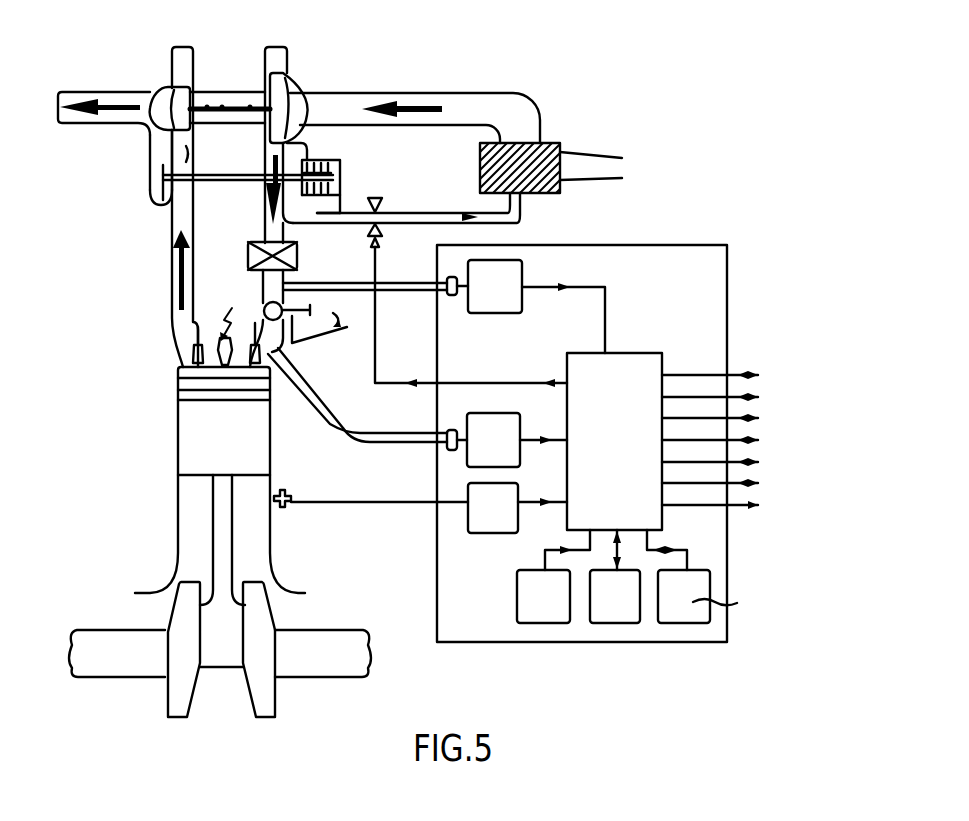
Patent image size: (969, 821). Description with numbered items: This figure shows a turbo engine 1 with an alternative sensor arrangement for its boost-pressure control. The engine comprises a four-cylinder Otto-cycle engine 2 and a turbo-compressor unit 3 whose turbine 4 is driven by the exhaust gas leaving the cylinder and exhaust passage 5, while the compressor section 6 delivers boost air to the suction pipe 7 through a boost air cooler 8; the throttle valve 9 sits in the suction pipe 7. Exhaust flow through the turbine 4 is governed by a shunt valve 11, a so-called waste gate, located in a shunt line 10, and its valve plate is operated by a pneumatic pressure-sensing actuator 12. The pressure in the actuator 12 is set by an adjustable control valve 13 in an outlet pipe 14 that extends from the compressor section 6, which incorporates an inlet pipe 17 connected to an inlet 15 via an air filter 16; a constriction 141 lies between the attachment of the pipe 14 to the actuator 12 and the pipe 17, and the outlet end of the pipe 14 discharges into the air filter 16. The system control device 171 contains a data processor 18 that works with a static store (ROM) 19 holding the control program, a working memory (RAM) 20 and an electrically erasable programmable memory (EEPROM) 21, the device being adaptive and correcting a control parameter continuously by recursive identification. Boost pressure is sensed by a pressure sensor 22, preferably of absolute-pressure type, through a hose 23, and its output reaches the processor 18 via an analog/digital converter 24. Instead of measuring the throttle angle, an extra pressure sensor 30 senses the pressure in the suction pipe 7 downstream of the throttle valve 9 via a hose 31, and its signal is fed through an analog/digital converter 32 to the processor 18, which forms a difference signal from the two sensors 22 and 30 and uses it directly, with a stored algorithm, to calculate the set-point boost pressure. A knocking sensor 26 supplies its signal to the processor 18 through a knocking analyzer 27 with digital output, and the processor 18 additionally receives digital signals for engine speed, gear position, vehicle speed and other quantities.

The turbo engine 1 is at (227, 68).
The Otto-cycle engine 2 is at (188, 452).
The turbo-compressor unit 3 is at (230, 127).
The turbine 4 is at (170, 88).
The exhaust passage 5 is at (184, 158).
The compressor section 6 is at (292, 85).
The suction pipe 7 is at (262, 290).
The boost air cooler 8 is at (248, 250).
The throttle valve 9 is at (263, 314).
The shunt line 10 is at (150, 160).
The shunt valve 11 is at (150, 193).
The pneumatic pressure-sensing actuator 12 is at (318, 160).
The adjustable control valve 13 is at (382, 205).
The pipe 14 is at (465, 215).
The constriction 141 is at (318, 215).
The inlet 15 is at (598, 163).
The air filter 16 is at (547, 143).
The inlet pipe 17 is at (262, 205).
The data processor 18 is at (628, 353).
The static store (ROM) 19 is at (528, 625).
The working memory (RAM) 20 is at (603, 625).
The electronic erasable programmable memory (EEPROM) 21 is at (678, 625).
The pressure sensor 22 is at (447, 278).
The hose 23 is at (388, 292).
The analog/digital converter 24 is at (524, 262).
The knocking sensor 26 is at (290, 510).
The knocking analyzer 27 is at (503, 537).
The pressure sensor 30 is at (447, 430).
The hose 31 is at (343, 397).
The analog/digital converter 32 is at (523, 415).
The system control device 171 is at (730, 270).